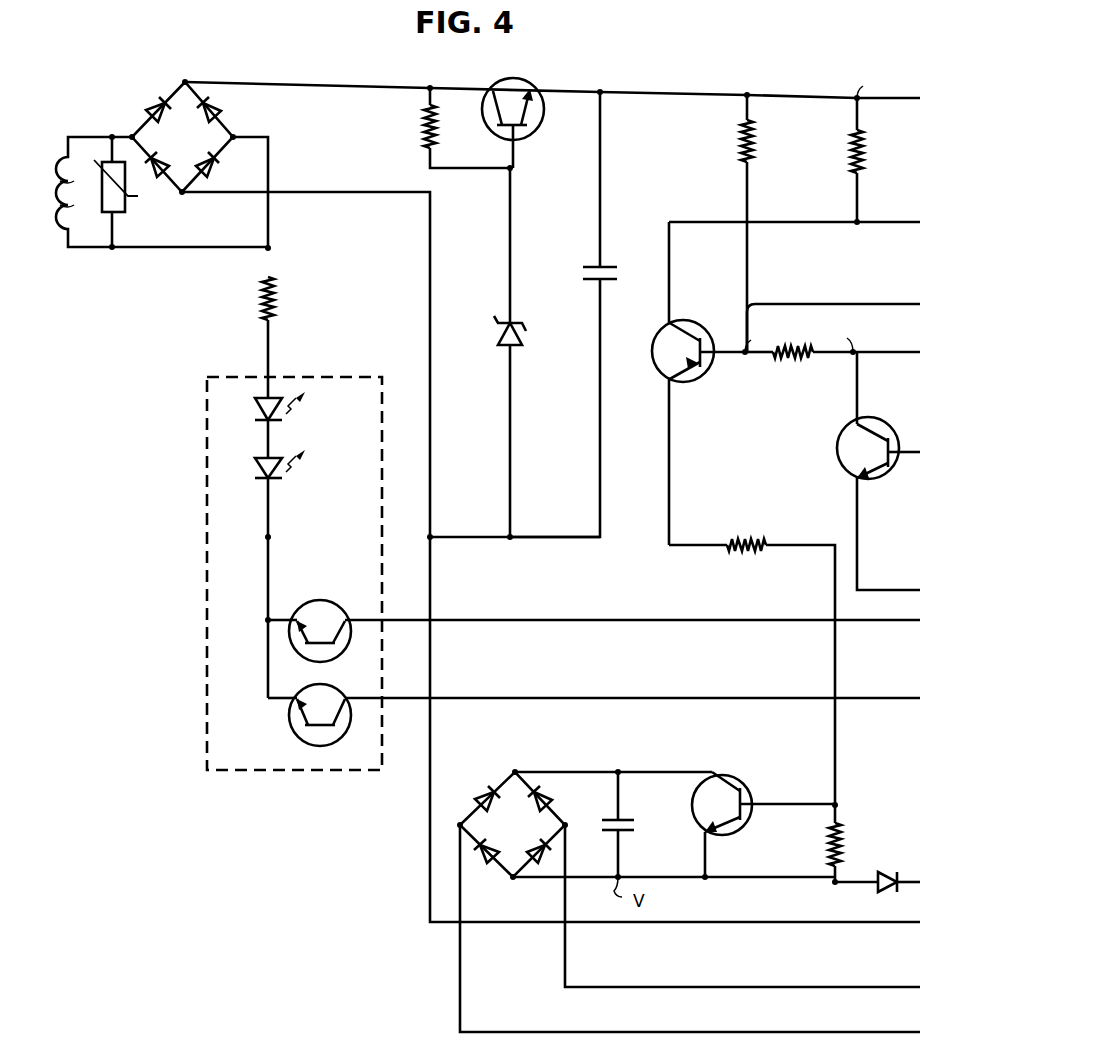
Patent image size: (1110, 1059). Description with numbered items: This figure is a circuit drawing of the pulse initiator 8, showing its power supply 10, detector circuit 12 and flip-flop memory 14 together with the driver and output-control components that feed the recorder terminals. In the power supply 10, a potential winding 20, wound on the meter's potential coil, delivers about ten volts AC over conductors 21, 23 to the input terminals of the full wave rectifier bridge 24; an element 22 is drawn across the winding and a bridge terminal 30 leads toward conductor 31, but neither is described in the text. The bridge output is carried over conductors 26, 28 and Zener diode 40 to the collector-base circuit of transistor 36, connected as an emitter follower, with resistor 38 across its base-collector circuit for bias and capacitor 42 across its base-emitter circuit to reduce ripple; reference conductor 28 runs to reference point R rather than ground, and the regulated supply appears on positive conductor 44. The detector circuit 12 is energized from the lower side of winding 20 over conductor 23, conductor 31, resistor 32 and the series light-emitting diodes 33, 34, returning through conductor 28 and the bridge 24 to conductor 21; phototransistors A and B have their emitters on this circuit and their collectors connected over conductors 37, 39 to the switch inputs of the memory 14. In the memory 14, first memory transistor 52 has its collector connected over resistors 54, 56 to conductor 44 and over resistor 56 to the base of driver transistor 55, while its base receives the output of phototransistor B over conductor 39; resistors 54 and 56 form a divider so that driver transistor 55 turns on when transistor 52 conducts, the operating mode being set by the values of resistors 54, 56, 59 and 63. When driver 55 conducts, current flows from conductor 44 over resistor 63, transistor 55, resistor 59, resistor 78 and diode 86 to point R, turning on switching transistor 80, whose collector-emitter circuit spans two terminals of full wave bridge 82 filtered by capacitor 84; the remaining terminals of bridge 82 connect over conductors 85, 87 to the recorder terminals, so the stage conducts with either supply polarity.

The pulse initiator 8 is at (775, 65).
The power supply 10 is at (235, 289).
The detector circuit 12 is at (372, 801).
The memory circuit 14 is at (786, 434).
The potential winding 20 is at (162, 192).
The conductor 21 is at (116, 123).
The varistor 22 is at (120, 214).
The conductor 23 is at (112, 247).
The full wave rectifier bridge 24 is at (182, 137).
The conductor 26 is at (357, 83).
The reference conductor 28 is at (310, 192).
The bridge output terminal 30 is at (253, 137).
The conductor 31 is at (268, 248).
The resistor 32 is at (274, 300).
The light-emitting diode 33 is at (290, 425).
The light-emitting diode 34 is at (290, 574).
The transistor 36 is at (497, 78).
The conductor 37 is at (418, 620).
The resistor 38 is at (437, 128).
The conductor 39 is at (418, 698).
The Zener diode 40 is at (519, 352).
The capacitor 42 is at (570, 282).
The positive potential conductor 44 is at (612, 92).
The first memory transistor 52 is at (838, 436).
The resistor 54 is at (728, 148).
The driver transistor 55 is at (715, 332).
The resistor 56 is at (792, 360).
The resistor 59 is at (738, 538).
The resistor 63 is at (840, 153).
The resistor 78 is at (822, 850).
The switching transistor 80 is at (742, 742).
The full wave bridge rectifier 82 is at (513, 830).
The capacitor 84 is at (650, 826).
The conductor 85 is at (625, 986).
The diode 86 is at (895, 872).
The conductor 87 is at (625, 1030).